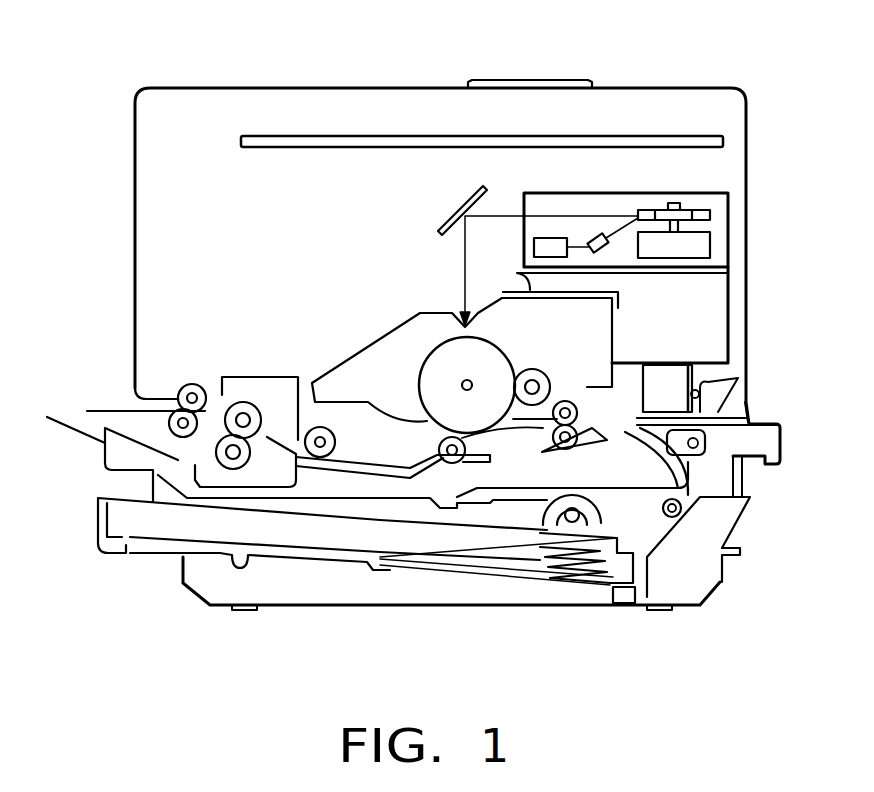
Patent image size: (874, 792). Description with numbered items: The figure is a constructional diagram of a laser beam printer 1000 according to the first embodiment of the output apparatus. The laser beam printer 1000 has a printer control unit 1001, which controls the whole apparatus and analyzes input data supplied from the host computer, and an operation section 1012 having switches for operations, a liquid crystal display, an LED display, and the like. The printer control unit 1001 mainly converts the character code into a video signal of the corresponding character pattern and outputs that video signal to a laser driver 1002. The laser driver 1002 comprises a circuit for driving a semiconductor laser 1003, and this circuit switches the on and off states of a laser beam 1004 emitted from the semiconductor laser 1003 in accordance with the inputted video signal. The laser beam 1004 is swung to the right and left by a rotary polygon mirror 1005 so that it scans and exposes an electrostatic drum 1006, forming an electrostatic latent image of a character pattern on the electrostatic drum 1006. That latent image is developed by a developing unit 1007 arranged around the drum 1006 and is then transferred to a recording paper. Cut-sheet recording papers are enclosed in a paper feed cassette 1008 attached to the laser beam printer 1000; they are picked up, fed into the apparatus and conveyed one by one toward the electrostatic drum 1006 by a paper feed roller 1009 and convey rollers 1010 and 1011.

The laser beam printer 1000 is at (690, 88).
The printer control unit 1001 is at (723, 140).
The laser driver 1002 is at (549, 238).
The semiconductor laser 1003 is at (600, 250).
The laser beam 1004 is at (600, 216).
The rotary polygon mirror 1005 is at (713, 216).
The electrostatic drum 1006 is at (438, 347).
The developing unit 1007 is at (360, 375).
The paper feed cassette 1008 is at (95, 527).
The paper feed roller 1009 is at (543, 527).
The convey roller 1010 is at (672, 517).
The convey roller 1011 is at (700, 384).
The operation section 1012 is at (525, 80).